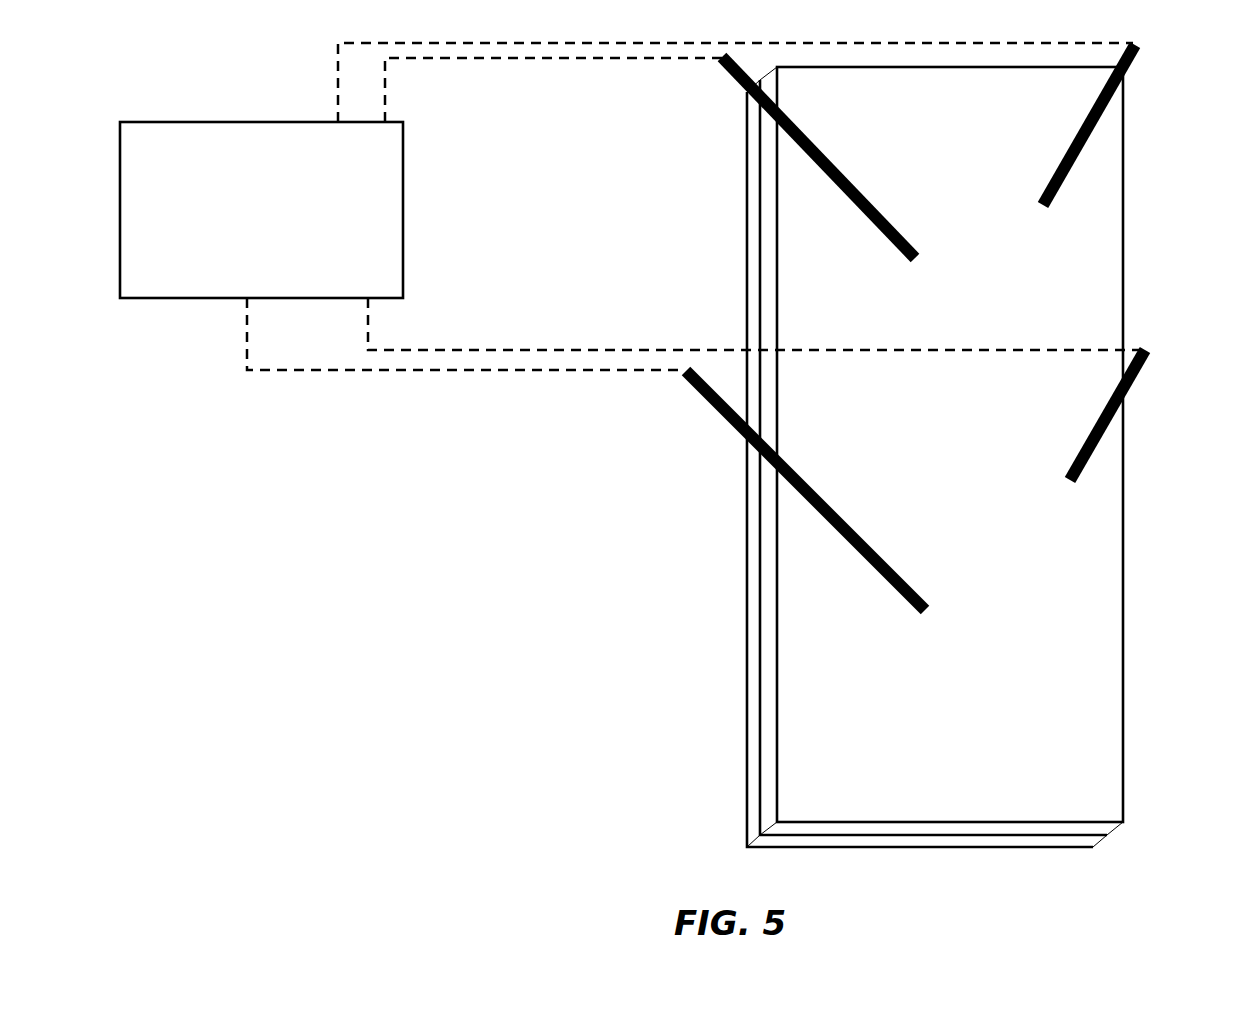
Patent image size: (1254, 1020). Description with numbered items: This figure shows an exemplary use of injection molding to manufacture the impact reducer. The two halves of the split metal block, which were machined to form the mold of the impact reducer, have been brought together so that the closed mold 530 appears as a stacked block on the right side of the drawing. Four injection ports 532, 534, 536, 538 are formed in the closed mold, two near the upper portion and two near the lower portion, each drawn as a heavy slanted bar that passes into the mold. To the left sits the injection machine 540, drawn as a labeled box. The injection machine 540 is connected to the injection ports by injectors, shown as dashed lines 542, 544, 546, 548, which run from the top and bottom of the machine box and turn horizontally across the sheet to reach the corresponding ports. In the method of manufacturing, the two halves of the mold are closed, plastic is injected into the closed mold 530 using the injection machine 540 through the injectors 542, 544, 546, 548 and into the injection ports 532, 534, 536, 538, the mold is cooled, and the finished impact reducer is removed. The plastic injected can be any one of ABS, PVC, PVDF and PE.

The closed mold 530 is at (732, 236).
The injection port 532 is at (804, 157).
The injection port 534 is at (1104, 125).
The injection port 536 is at (1119, 415).
The injection port 538 is at (803, 490).
The injection machine 540 is at (261, 210).
The injector 542 is at (466, 348).
The injector 544 is at (754, 341).
The injector 546 is at (554, 90).
The injector 548 is at (735, 68).